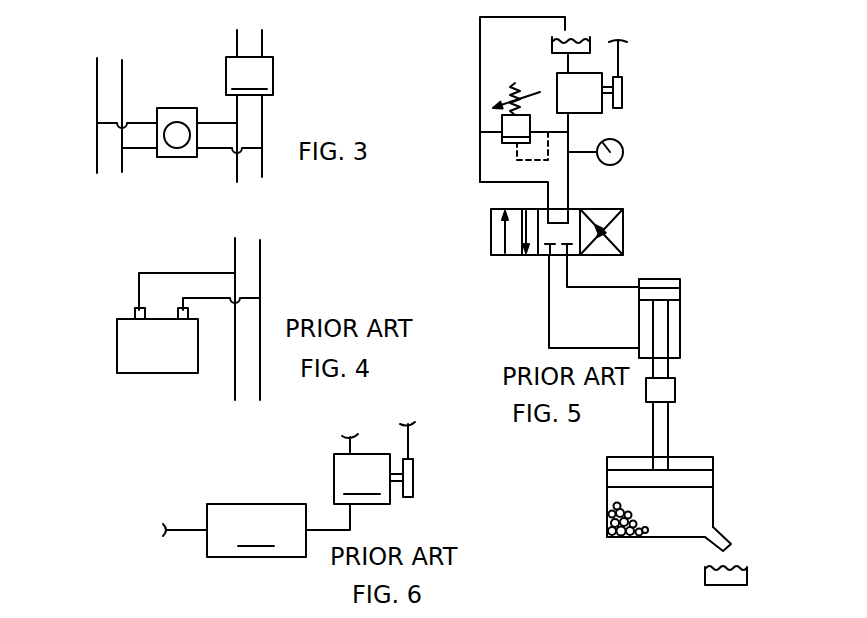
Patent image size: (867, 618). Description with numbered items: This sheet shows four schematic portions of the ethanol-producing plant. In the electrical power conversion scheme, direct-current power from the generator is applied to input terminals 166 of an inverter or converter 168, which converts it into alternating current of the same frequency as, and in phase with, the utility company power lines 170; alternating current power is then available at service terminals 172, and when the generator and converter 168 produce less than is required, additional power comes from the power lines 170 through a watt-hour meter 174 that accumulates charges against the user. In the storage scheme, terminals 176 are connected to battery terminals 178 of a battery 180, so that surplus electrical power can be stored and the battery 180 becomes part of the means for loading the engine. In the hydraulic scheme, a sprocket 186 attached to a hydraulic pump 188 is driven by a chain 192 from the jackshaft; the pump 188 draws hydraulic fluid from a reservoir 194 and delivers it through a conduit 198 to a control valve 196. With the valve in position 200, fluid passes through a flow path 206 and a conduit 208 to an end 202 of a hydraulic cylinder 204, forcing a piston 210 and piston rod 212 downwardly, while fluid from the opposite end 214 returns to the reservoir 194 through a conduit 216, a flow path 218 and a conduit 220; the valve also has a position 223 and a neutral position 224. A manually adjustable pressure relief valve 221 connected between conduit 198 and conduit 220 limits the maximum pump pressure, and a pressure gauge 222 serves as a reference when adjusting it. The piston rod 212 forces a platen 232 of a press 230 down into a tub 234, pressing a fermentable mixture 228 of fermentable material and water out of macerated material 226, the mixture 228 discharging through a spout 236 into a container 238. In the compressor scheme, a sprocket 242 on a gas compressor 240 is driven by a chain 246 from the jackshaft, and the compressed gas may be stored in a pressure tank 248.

In FIG. 3, the input terminals 166 is at (262, 32).
In FIG. 3, the inverter or converter 168 is at (249, 76).
In FIG. 3, the utility company power lines 170 is at (123, 72).
In FIG. 3, the service terminals 172 is at (262, 177).
In FIG. 3, the watt-hour meter 174 is at (167, 157).
In FIG. 4, the terminals 176 is at (260, 242).
In FIG. 4, the battery terminals 178 is at (135, 313).
In FIG. 4, the battery 180 is at (157, 346).
In FIG. 5, the sprocket 186 is at (622, 88).
In FIG. 5, the hydraulic pump 188 is at (680, 105).
In FIG. 5, the chain 192 is at (622, 50).
In FIG. 5, the reservoir 194 is at (552, 44).
In FIG. 5, the control valve 196 is at (660, 220).
In FIG. 5, the conduit 198 is at (569, 188).
In FIG. 5, the position 200 is at (490, 223).
In FIG. 5, the end 202 is at (680, 281).
In FIG. 5, the hydraulic cylinder 204 is at (706, 325).
In FIG. 5, the flow path 206 is at (518, 255).
In FIG. 5, the conduit 208 is at (581, 289).
In FIG. 5, the piston 210 is at (680, 296).
In FIG. 5, the piston rod 212 is at (668, 335).
In FIG. 5, the end 214 is at (680, 351).
In FIG. 5, the conduit 216 is at (549, 330).
In FIG. 5, the flow path 218 is at (502, 238).
In FIG. 5, the conduit 220 is at (565, 30).
In FIG. 5, the pressure relief valve 221 is at (538, 75).
In FIG. 5, the pressure gauge 222 is at (624, 150).
In FIG. 5, the position 223 is at (623, 240).
In FIG. 5, the neutral position 224 is at (545, 256).
In FIG. 5, the macerated material 226 is at (623, 505).
In FIG. 5, the fermentable mixture 228 is at (637, 523).
In FIG. 5, the press 230 is at (700, 443).
In FIG. 5, the platen 232 is at (713, 470).
In FIG. 5, the tub 234 is at (713, 503).
In FIG. 5, the spout 236 is at (731, 540).
In FIG. 5, the container 238 is at (703, 582).
In FIG. 6, the gas compressor 240 is at (362, 469).
In FIG. 6, the sprocket 242 is at (414, 470).
In FIG. 6, the chain 246 is at (414, 433).
In FIG. 6, the pressure tank 248 is at (256, 530).